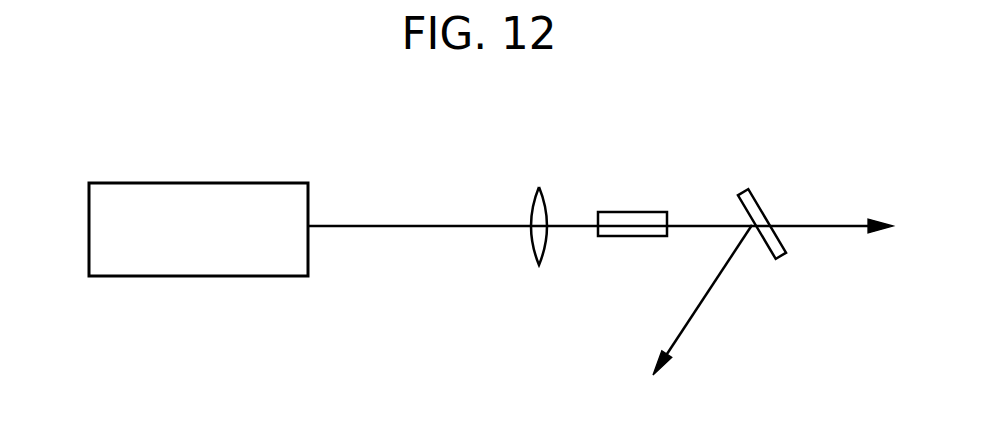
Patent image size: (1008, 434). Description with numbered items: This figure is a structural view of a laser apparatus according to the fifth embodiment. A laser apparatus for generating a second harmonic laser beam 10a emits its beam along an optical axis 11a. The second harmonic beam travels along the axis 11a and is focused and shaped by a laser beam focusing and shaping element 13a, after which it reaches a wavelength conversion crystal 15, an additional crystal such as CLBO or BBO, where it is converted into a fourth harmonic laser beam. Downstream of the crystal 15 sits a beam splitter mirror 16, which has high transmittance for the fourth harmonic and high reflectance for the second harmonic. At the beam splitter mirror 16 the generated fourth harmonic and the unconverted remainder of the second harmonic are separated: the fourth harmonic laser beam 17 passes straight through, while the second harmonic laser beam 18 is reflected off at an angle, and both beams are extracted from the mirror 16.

The laser apparatus for generating second harmonic laser beam 10a is at (206, 183).
The optical axis of a laser beam 11a is at (410, 226).
The laser beam focusing and shaping element 13a is at (538, 187).
The wavelength conversion crystal 15 is at (637, 212).
The beam splitter mirror 16 is at (747, 190).
The fourth harmonic laser beam 17 is at (823, 226).
The second harmonic laser beam 18 is at (707, 290).